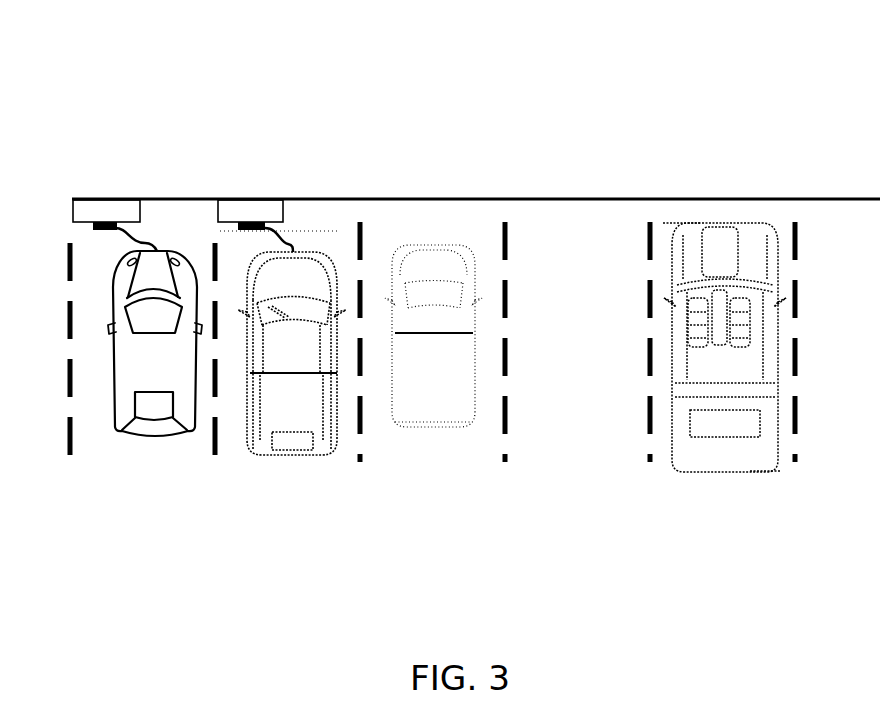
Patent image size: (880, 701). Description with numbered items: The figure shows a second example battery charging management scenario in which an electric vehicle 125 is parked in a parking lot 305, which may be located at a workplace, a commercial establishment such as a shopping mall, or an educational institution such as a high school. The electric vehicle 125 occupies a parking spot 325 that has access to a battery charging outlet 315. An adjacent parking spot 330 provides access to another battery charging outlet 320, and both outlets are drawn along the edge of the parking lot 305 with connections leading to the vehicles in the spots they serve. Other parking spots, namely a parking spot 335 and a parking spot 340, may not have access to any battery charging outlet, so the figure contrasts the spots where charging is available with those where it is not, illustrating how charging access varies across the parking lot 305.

The parking lot 305 is at (684, 100).
The battery charging outlet 315 is at (117, 218).
The battery charging outlet 320 is at (261, 218).
The electric vehicle 125 is at (115, 363).
The parking spot 325 is at (93, 488).
The parking spot 330 is at (233, 488).
The parking spot 335 is at (381, 488).
The parking spot 340 is at (669, 488).